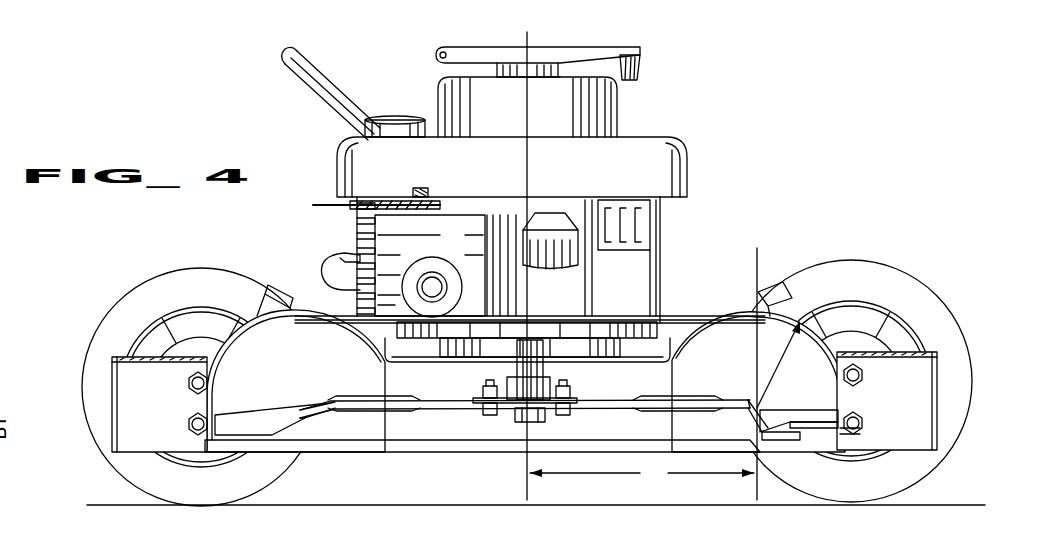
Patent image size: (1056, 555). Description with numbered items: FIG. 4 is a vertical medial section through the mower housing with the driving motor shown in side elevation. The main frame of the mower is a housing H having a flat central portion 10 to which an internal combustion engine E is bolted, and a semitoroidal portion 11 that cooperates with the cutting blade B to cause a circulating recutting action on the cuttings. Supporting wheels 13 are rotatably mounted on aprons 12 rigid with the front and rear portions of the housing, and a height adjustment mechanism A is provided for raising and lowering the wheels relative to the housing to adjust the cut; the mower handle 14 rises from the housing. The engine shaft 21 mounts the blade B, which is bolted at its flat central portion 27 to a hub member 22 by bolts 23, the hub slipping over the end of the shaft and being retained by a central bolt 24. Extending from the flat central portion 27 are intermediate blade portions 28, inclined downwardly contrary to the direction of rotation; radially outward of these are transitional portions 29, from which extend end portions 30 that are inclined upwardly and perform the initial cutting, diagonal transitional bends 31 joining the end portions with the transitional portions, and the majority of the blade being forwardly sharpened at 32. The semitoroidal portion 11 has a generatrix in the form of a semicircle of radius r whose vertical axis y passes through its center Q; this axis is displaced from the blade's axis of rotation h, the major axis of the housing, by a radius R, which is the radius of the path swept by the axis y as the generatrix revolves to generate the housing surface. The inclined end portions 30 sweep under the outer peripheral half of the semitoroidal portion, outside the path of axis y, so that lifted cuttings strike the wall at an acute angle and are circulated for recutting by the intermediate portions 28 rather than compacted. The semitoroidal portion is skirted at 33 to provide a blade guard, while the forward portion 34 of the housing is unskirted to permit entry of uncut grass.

The flat central portion 10 is at (640, 322).
The semitoroidal portion 11 is at (740, 305).
The aprons 12 is at (112, 383).
The supporting wheels 13 is at (155, 302).
The mower handle 14 is at (325, 70).
The engine shaft 21 is at (545, 372).
The hub member 22 is at (507, 388).
The bolts 23 is at (490, 416).
The central bolt 24 is at (525, 422).
The flat central portion 27 is at (425, 407).
The intermediate blade portions 28 is at (380, 400).
The transitional portions 29 is at (312, 404).
The end portions 30 is at (235, 420).
The transitional bends 31 is at (298, 406).
The sharpened edge 32 is at (822, 428).
The skirt 33 is at (330, 440).
The forward portion of the housing 34 is at (868, 432).
The height adjustment mechanism A is at (264, 306).
The cutting blade B is at (438, 410).
The internal combustion engine E is at (655, 233).
The housing H is at (701, 317).
The center of the generatrix Q is at (752, 412).
The radius R is at (642, 473).
The axis of rotation h is at (528, 36).
The radius of the generatrix r is at (778, 364).
The vertical axis of the generatrix y is at (756, 333).